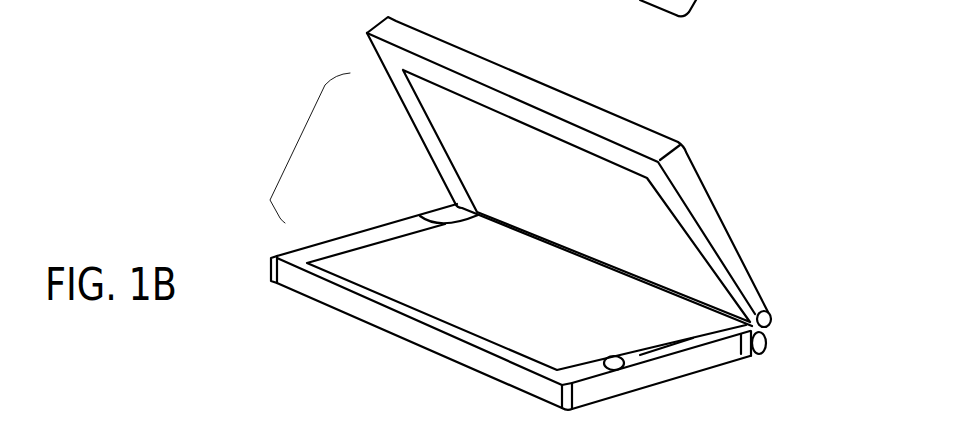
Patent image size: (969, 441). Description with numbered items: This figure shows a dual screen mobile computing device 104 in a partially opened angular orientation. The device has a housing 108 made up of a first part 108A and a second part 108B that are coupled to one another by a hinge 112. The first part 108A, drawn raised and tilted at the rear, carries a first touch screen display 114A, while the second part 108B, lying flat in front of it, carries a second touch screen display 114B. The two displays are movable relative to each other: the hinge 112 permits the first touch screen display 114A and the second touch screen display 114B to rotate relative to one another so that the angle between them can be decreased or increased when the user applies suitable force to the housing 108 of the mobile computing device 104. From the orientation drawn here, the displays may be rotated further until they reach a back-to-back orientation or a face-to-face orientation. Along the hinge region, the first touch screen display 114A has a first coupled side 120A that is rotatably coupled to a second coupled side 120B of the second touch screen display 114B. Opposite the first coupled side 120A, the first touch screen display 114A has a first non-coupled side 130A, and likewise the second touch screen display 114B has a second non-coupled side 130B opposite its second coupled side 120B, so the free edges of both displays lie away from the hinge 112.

The mobile computing device 104 is at (743, 168).
The housing 108 is at (298, 140).
The first part 108A is at (418, 132).
The second part 108B is at (383, 224).
The hinge 112 is at (766, 333).
The first touch screen display 114A is at (562, 188).
The second touch screen display 114B is at (507, 305).
The first coupled side 120A is at (697, 302).
The second coupled side 120B is at (422, 215).
The first non-coupled side 130A is at (585, 117).
The second non-coupled side 130B is at (407, 330).